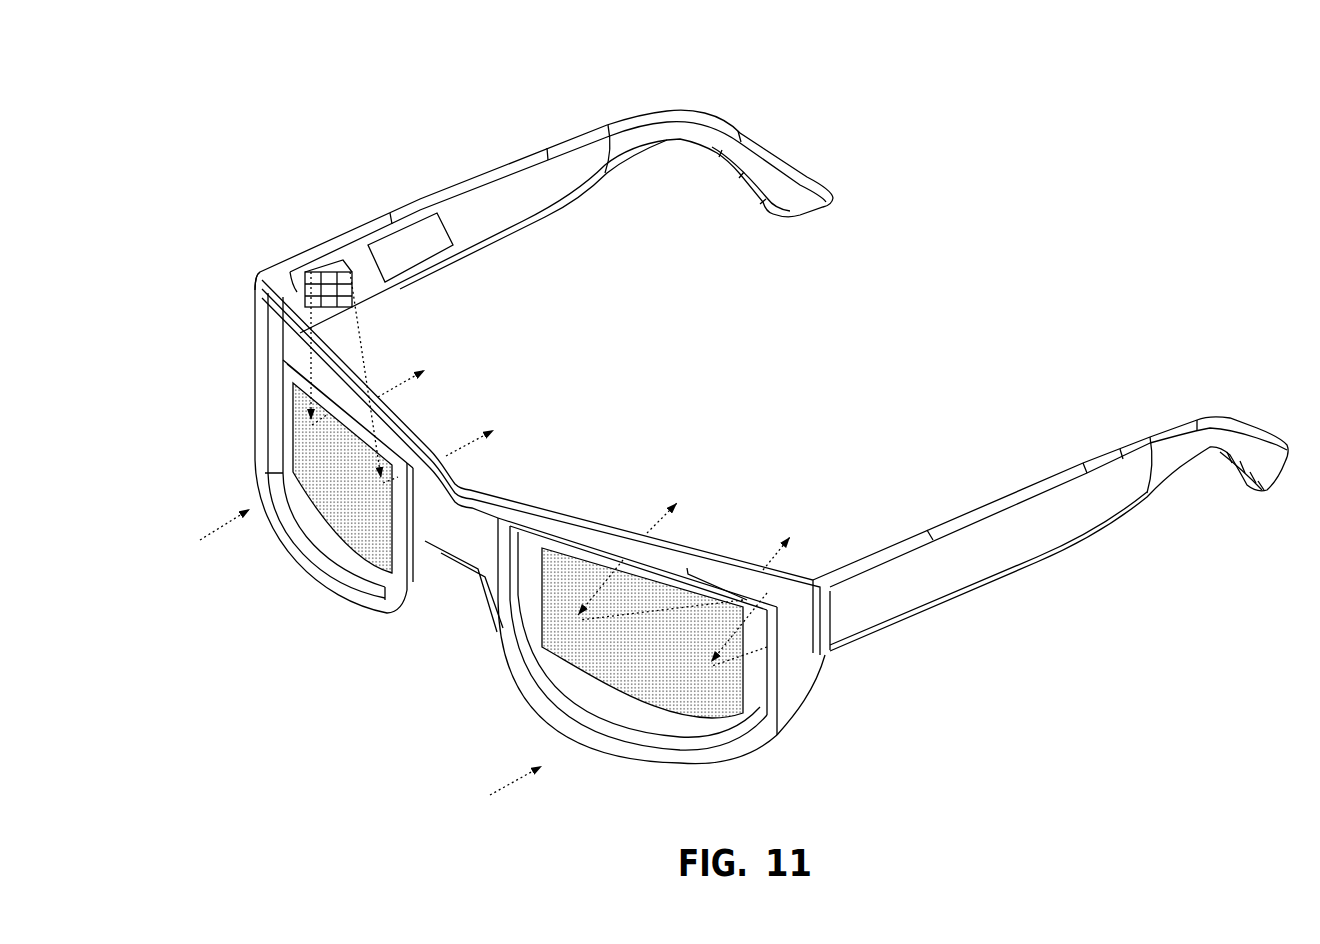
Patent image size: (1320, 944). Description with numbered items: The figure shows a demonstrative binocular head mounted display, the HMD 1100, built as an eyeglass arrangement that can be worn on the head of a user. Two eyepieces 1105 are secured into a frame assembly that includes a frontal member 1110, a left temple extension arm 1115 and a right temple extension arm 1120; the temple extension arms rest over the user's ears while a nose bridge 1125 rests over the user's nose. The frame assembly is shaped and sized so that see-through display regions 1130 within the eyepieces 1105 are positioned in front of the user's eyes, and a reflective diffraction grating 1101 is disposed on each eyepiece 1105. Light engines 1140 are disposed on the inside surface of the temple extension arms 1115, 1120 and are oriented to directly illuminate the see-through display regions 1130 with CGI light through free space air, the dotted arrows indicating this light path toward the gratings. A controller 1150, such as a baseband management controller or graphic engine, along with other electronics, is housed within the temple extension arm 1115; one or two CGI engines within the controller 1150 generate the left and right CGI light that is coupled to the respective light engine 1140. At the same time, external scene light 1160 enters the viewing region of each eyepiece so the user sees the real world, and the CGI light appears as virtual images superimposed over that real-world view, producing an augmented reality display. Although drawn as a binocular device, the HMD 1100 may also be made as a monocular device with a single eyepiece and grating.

The binocular HMD 1100 is at (1238, 97).
The reflective diffraction grating 1101 is at (358, 490).
The eyepiece 1105 is at (285, 375).
The frontal member 1110 is at (564, 420).
The left temple extension arm 1115 is at (482, 173).
The right temple extension arm 1120 is at (1055, 478).
The nose bridge 1125 is at (473, 506).
The see-through display region 1130 is at (350, 543).
The light engine 1140 is at (338, 268).
The controller 1150 is at (410, 247).
The external scene light 1160 is at (232, 522).